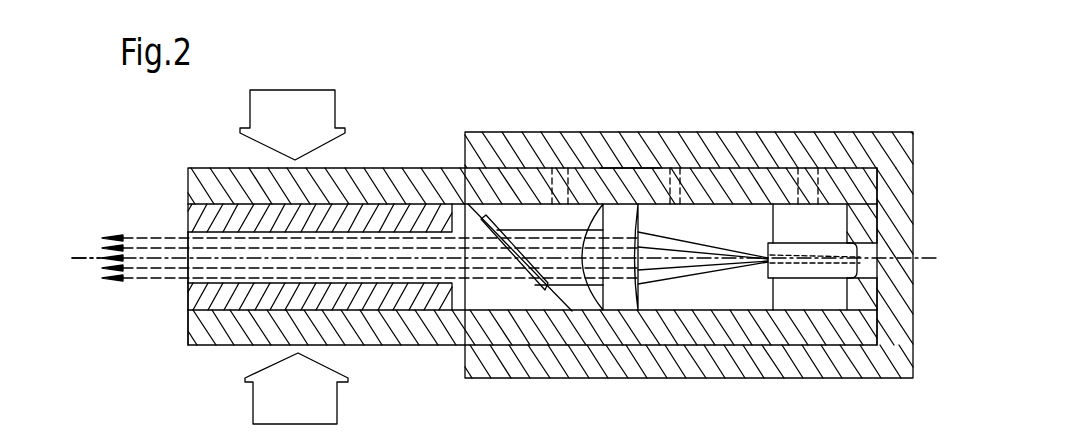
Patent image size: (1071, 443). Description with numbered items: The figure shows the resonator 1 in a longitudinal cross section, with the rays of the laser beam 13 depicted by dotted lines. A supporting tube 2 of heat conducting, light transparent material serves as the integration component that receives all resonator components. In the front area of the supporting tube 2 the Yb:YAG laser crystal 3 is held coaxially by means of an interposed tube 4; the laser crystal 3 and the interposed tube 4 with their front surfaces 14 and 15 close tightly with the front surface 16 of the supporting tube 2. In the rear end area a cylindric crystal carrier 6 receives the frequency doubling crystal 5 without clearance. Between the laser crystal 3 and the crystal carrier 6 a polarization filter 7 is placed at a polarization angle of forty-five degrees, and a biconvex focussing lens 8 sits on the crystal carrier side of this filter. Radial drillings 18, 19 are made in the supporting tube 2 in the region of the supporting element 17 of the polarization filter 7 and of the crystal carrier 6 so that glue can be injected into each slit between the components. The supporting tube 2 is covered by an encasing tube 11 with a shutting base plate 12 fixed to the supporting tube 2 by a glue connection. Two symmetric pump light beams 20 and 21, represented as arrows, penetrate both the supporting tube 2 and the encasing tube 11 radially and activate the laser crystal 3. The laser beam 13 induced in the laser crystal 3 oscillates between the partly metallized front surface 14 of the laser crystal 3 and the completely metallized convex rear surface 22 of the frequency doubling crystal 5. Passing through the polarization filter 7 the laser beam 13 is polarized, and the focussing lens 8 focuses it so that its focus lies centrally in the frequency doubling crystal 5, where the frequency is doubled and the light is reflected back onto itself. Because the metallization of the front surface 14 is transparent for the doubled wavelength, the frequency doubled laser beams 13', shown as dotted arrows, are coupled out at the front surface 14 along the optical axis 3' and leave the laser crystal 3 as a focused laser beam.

The resonator 1 is at (816, 110).
The supporting tube 2 is at (388, 168).
The laser crystal 3 is at (380, 316).
The optical axis 3' is at (75, 293).
The interposed tube 4 is at (223, 214).
The frequency doubling crystal 5 is at (820, 272).
The crystal carrier 6 is at (783, 300).
The polarization filter 7 is at (537, 290).
The focussing lens 8 is at (622, 290).
The encasing tube 11 is at (630, 160).
The base plate 12 is at (900, 212).
The laser beam 13 is at (702, 194).
The laser beams 13' is at (125, 223).
The front surface 14 is at (185, 263).
The front surface 15 is at (187, 295).
The front surface 16 is at (187, 330).
The supporting element 17 is at (530, 216).
The radial drilling 18 is at (560, 200).
The radial drilling 19 is at (744, 141).
The pump light beam 20 is at (305, 110).
The pump light beam 21 is at (322, 398).
The rear surface 22 is at (858, 263).